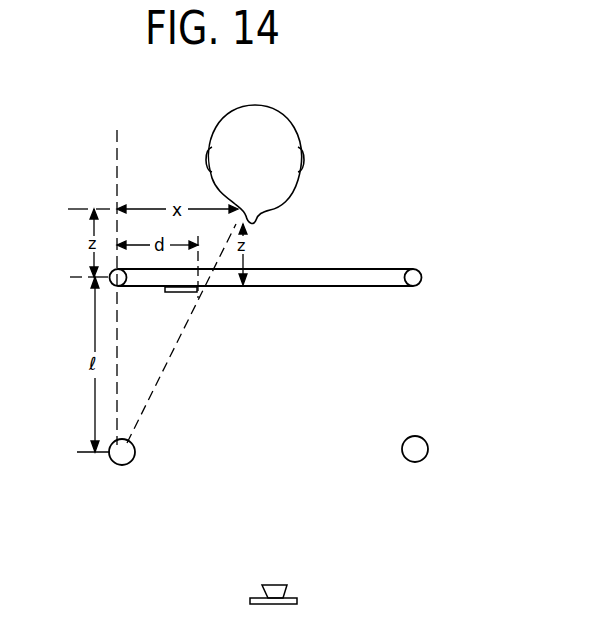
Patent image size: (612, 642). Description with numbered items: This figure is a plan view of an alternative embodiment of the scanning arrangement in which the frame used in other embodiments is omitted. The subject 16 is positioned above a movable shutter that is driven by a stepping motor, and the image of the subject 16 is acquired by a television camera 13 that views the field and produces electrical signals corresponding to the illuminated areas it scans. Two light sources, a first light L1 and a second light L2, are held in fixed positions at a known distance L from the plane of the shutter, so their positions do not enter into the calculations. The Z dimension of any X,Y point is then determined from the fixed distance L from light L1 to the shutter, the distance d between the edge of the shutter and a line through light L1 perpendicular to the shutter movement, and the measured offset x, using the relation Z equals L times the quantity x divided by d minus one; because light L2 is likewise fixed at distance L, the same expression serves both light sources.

The subject 16 is at (285, 137).
The television camera 13 is at (290, 594).
The first light source L1 is at (116, 465).
The second light source L2 is at (410, 461).